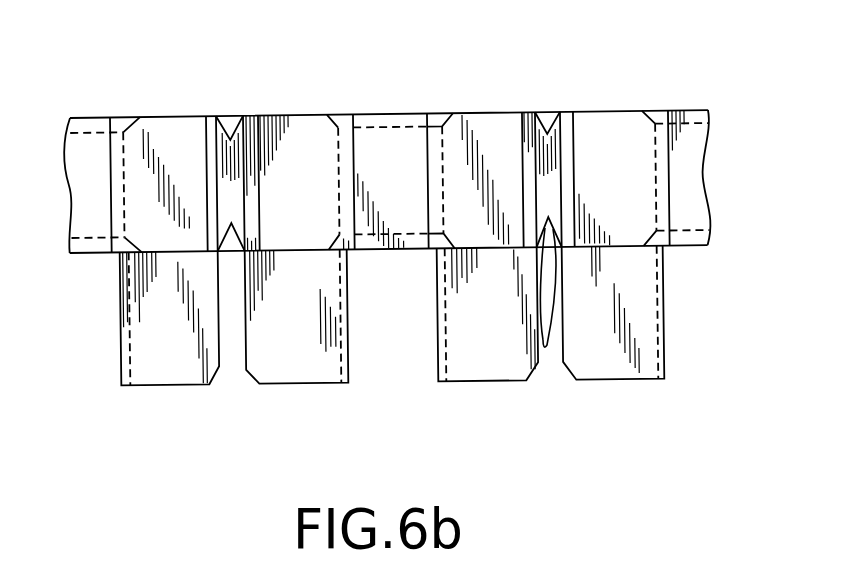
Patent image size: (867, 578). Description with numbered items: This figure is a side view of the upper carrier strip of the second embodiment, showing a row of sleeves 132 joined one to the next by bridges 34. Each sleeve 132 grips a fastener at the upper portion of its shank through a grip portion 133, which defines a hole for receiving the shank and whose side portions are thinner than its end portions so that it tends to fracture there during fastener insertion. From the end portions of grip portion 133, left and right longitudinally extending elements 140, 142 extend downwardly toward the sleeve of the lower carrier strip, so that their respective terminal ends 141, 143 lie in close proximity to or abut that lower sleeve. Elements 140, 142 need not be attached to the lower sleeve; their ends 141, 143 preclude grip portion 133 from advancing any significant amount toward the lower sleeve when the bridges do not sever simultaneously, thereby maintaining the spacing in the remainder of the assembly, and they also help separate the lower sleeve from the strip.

The sleeve 132 is at (418, 78).
The grip portion 133 is at (305, 117).
The longitudinally extending element 140 is at (308, 302).
The terminal end 141 is at (283, 385).
The longitudinally extending element 142 is at (500, 347).
The terminal end 143 is at (463, 382).
The bridge 34 is at (543, 340).